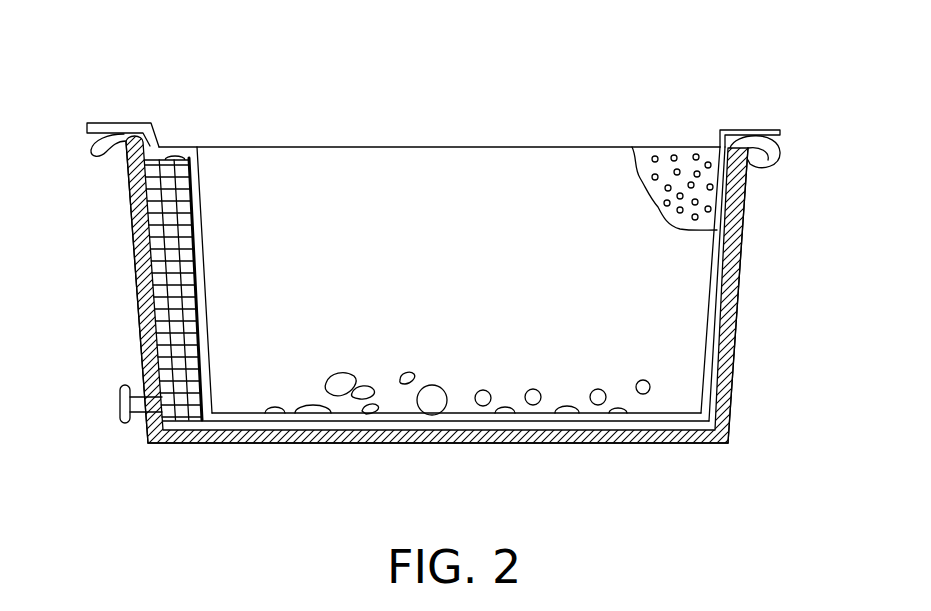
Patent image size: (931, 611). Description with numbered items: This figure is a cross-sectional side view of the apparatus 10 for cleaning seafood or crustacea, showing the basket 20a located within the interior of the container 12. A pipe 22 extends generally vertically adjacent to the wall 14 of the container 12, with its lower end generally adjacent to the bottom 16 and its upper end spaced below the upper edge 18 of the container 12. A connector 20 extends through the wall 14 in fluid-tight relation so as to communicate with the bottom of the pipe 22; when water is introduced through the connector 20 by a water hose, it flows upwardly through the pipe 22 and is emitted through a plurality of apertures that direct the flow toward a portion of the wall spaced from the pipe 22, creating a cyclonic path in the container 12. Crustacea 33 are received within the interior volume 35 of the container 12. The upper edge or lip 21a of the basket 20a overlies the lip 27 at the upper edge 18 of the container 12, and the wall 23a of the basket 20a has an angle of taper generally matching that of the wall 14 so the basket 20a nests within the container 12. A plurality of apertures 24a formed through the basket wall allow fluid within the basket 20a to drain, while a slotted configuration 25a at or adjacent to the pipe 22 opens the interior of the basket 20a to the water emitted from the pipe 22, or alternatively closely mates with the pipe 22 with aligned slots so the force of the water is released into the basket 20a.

The apparatus 10 is at (812, 292).
The container 12 is at (736, 353).
The wall 14 is at (132, 232).
The bottom 16 is at (635, 440).
The upper edge 18 is at (413, 147).
The connector 20 is at (125, 423).
The basket 20a is at (708, 340).
The upper edge or lip of the basket 21a is at (108, 122).
The pipe 22 is at (193, 247).
The wall of the basket 23a is at (708, 282).
The apertures 24a is at (685, 160).
The slotted configuration 25a is at (198, 202).
The lip 27 is at (778, 148).
The crustacea 33 is at (443, 388).
The interior volume 35 is at (732, 253).